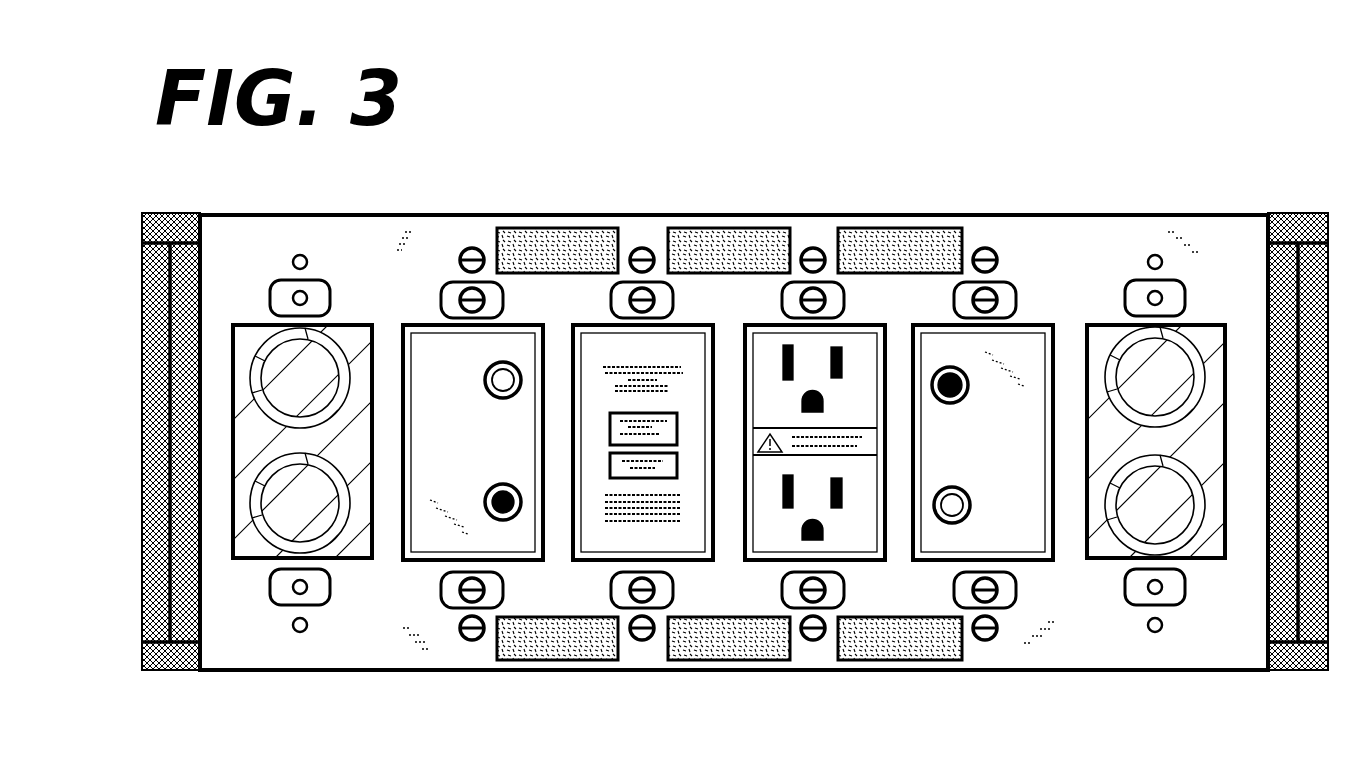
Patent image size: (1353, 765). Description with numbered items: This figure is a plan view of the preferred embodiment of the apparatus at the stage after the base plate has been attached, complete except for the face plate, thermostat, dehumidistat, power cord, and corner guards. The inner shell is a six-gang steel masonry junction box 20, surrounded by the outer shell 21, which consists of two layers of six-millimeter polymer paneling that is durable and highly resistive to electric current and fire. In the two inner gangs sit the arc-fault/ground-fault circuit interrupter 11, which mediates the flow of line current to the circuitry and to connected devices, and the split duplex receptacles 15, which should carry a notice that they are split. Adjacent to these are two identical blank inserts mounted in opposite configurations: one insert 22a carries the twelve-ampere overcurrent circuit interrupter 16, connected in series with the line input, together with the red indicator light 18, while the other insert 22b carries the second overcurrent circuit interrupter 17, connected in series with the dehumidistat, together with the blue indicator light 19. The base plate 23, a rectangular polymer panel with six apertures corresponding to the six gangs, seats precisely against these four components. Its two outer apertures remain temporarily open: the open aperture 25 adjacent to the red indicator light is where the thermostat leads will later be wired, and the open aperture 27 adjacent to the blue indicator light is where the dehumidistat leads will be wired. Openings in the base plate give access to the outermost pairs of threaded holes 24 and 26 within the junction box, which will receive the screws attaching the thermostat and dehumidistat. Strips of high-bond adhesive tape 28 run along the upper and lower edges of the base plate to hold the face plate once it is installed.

The arc-fault/ground-fault circuit interrupter 11 is at (598, 345).
The split duplex receptacles 15 is at (861, 348).
The 12-ampere overcurrent circuit interrupter 16 is at (964, 398).
The second overcurrent circuit interrupter 17 is at (488, 486).
The red indicator light 18 is at (970, 505).
The blue indicator light 19 is at (485, 383).
The junction box 20 is at (250, 345).
The outer shell 21 is at (195, 625).
The insert 22a is at (1025, 350).
The insert 22b is at (428, 345).
The base plate 23 is at (1058, 263).
The threaded holes 24 is at (1140, 298).
The open aperture 25 is at (1100, 560).
The threaded holes 26 is at (310, 298).
The open aperture 27 is at (372, 560).
The high-bond adhesive tape 28 is at (533, 275).